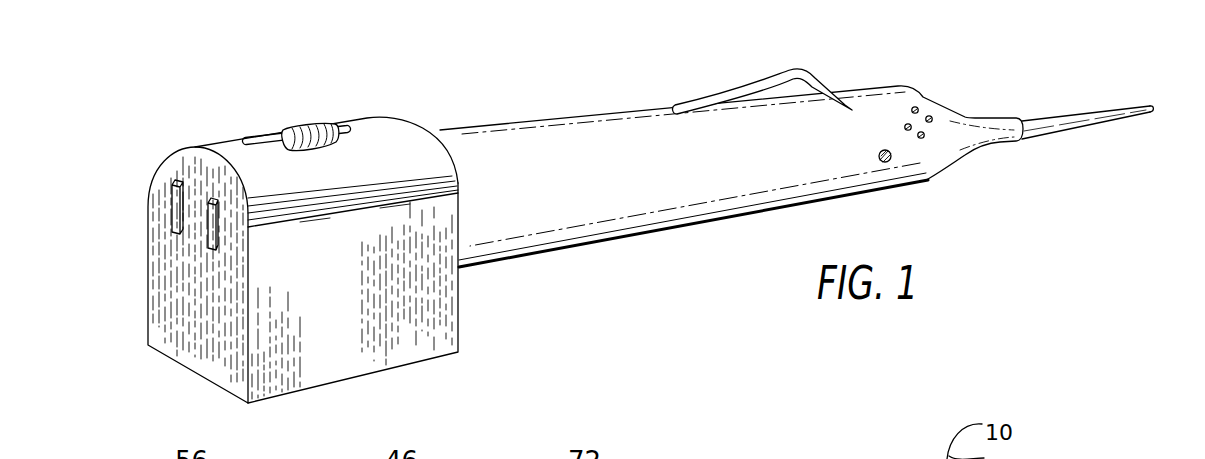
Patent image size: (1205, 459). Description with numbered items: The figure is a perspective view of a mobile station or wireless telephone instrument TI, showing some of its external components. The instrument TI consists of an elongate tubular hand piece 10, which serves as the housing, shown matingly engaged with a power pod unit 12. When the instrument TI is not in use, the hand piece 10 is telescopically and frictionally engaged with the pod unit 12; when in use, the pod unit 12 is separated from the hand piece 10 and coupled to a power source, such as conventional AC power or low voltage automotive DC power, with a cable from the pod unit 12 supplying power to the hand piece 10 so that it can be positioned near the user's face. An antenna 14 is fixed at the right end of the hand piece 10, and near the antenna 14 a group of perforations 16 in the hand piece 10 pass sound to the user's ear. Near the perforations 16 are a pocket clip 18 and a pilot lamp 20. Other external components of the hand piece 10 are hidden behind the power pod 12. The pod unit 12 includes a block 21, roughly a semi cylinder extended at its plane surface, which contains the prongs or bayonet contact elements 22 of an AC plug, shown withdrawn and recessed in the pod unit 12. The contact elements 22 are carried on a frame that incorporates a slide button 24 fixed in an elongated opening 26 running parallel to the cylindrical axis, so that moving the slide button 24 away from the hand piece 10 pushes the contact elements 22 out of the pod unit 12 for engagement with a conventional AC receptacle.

The hand piece 10 is at (860, 83).
The power pod unit 12 is at (387, 164).
The antenna 14 is at (1075, 130).
The perforations 16 is at (918, 109).
The pocket clip 18 is at (780, 74).
The pilot lamp 20 is at (892, 158).
The block 21 is at (420, 308).
The contact elements 22 is at (210, 237).
The slide button 24 is at (313, 127).
The elongated opening 26 is at (261, 141).
The wireless telephone instrument TI is at (571, 116).